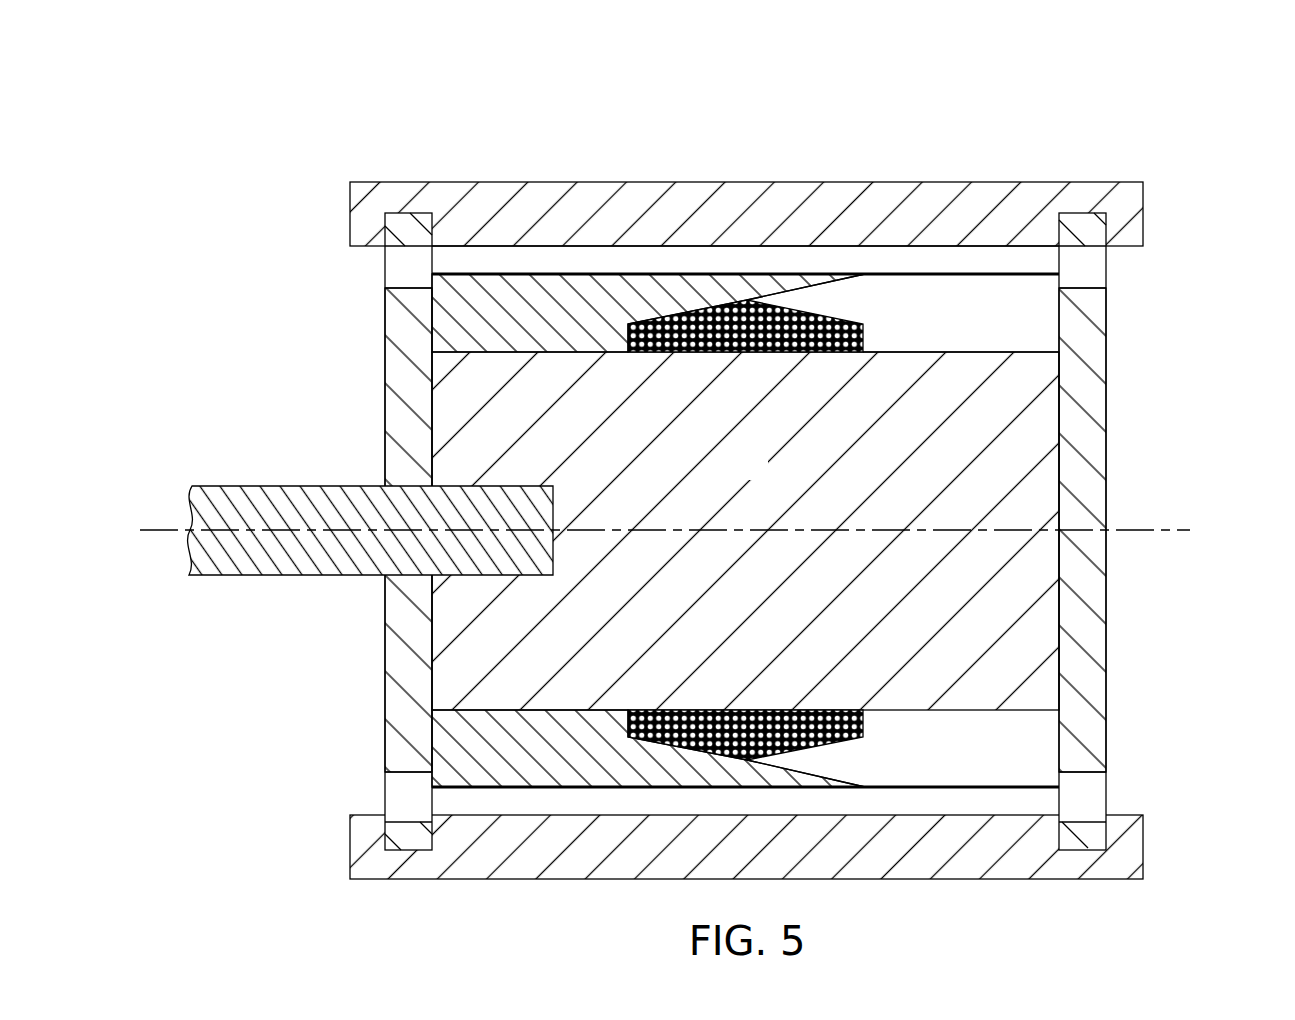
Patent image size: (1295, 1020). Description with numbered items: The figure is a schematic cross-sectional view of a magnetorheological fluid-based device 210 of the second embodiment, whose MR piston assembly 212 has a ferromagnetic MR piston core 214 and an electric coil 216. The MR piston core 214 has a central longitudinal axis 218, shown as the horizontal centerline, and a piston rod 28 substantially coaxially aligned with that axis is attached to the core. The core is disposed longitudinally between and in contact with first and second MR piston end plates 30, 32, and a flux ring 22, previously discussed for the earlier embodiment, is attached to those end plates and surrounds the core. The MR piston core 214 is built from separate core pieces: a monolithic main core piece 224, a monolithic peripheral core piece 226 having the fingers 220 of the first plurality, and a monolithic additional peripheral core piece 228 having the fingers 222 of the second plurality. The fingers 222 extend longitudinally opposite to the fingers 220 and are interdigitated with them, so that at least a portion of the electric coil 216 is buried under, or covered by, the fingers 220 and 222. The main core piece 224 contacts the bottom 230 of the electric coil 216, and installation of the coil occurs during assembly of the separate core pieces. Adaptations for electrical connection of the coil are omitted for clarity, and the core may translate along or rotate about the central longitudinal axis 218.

The magnetorheological fluid-based device 210 is at (1186, 128).
The MR piston assembly 212 is at (566, 174).
The flux ring 22 is at (905, 868).
The first MR piston end plate 30 is at (385, 370).
The second MR piston end plate 32 is at (1108, 384).
The piston rod 28 is at (250, 493).
The central longitudinal axis 218 is at (1170, 530).
The main core piece 224 is at (717, 476).
The peripheral core piece 226 is at (535, 298).
The fingers of the first plurality 220 is at (715, 292).
The fingers of the second plurality 222 is at (830, 300).
The MR piston core 214 is at (928, 273).
The additional peripheral core piece 228 is at (939, 320).
The bottom of the electric coil 230 is at (695, 354).
The electric coil 216 is at (732, 710).